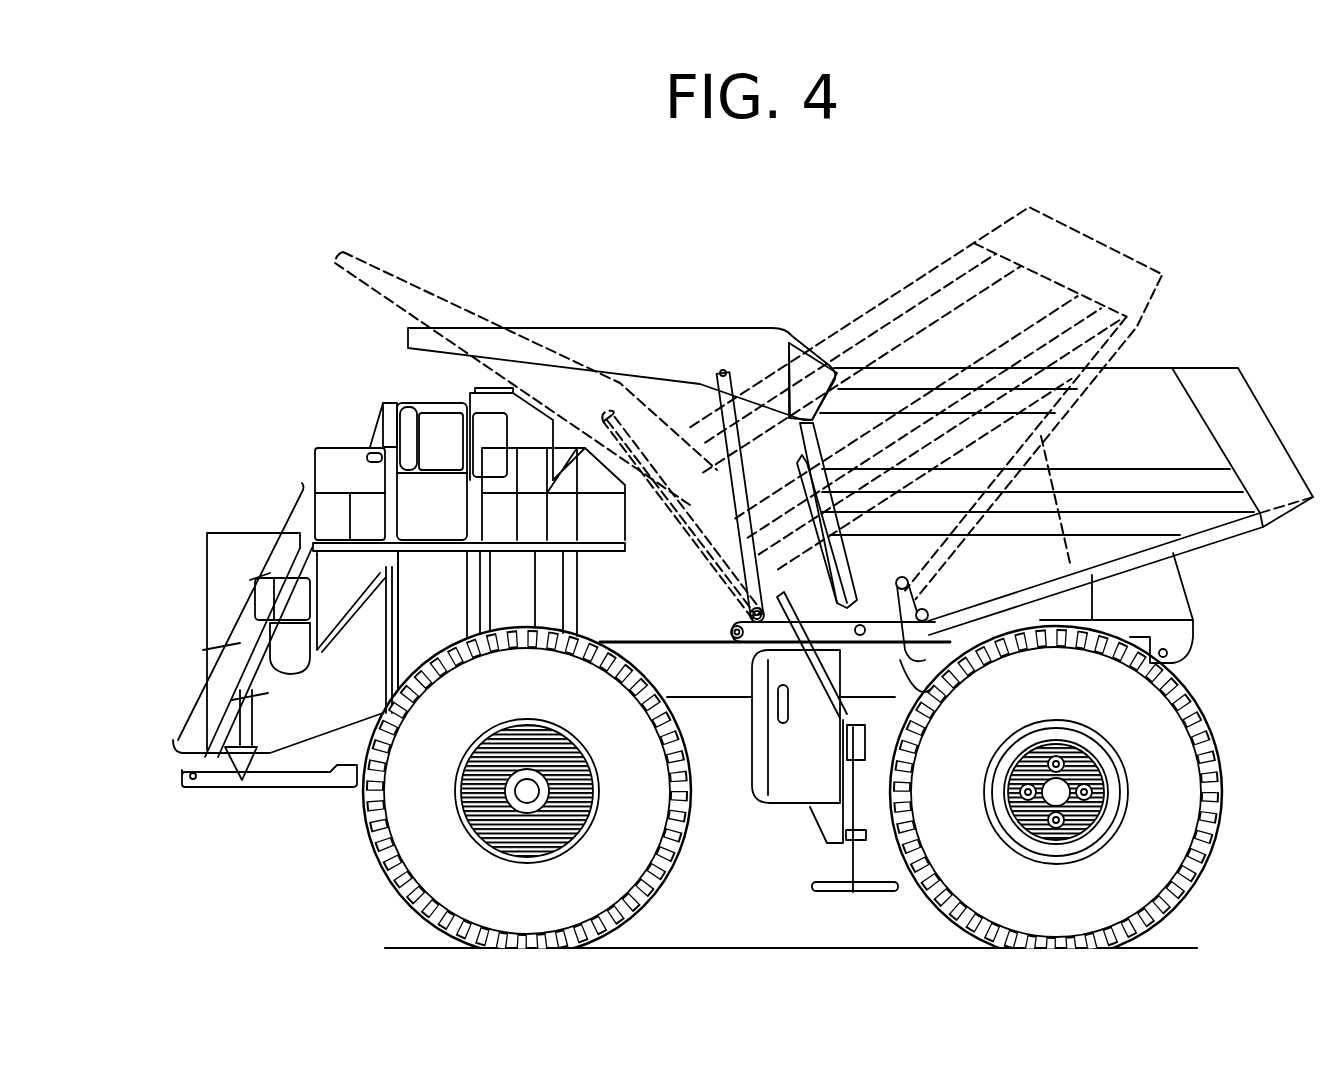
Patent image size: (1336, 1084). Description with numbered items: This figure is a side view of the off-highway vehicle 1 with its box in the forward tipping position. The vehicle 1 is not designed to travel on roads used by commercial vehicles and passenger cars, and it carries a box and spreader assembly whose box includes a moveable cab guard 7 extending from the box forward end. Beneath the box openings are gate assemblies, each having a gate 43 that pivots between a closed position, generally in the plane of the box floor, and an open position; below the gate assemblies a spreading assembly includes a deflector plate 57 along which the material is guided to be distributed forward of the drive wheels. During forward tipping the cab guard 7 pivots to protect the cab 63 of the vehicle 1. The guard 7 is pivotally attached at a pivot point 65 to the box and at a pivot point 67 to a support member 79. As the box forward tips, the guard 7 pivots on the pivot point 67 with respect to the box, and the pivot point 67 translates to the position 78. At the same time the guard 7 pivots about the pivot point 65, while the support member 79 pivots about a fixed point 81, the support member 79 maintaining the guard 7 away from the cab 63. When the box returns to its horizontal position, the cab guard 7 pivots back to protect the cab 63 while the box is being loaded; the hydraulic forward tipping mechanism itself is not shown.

The vehicle 1 is at (743, 562).
The moveable cab guard 7 is at (677, 333).
The gate 43 is at (926, 656).
The deflector plate 57 is at (778, 718).
The cab 63 is at (372, 386).
The pivot point 65 is at (723, 368).
The pivot point 67 is at (790, 380).
The position 78 is at (660, 455).
The support member 79 is at (708, 505).
The fixed point 81 is at (749, 614).